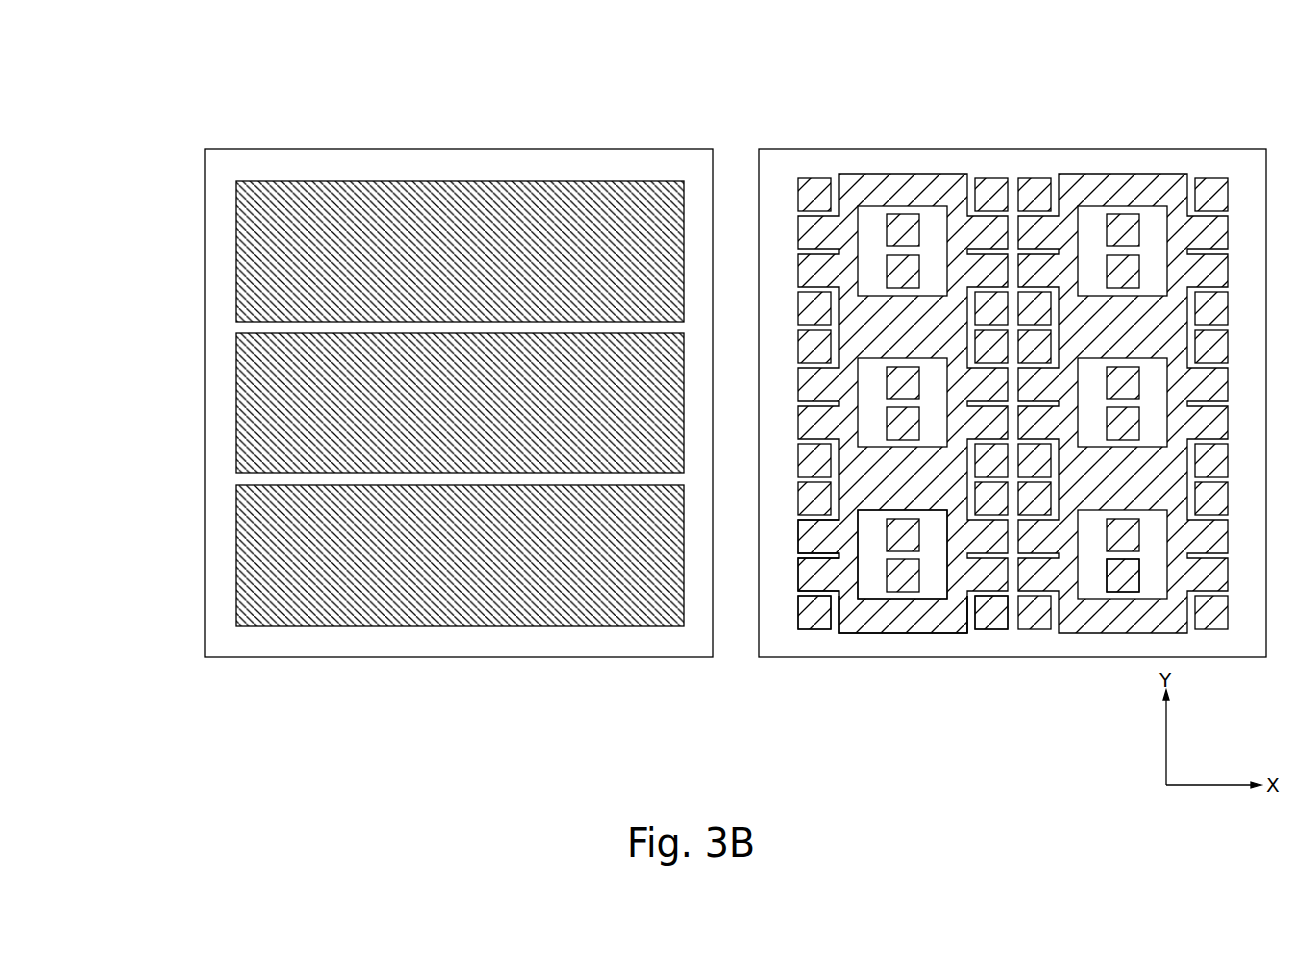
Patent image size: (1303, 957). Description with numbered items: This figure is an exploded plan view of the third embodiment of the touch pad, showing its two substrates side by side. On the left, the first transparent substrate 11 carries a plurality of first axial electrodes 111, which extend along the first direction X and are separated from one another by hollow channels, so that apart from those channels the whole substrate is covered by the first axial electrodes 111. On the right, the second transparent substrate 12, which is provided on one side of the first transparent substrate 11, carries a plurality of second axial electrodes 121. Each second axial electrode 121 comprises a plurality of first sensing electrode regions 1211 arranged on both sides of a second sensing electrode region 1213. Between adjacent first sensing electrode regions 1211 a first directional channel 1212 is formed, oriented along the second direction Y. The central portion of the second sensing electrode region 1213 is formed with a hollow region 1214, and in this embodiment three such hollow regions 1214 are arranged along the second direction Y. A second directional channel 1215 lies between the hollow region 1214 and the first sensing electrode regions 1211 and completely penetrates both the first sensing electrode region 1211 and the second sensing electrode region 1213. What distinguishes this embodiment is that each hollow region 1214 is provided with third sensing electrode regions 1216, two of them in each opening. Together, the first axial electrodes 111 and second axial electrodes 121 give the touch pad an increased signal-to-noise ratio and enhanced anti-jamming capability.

The first transparent substrate 11 is at (205, 163).
The first axial electrodes 111 is at (197, 187).
The second transparent substrate 12 is at (759, 165).
The second axial electrodes 121 is at (989, 142).
The first sensing electrode regions 1211 is at (818, 618).
The first directional channel 1212 is at (800, 543).
The second sensing electrode region 1213 is at (943, 618).
The hollow region 1214 is at (873, 555).
The second directional channel 1215 is at (971, 617).
The third sensing electrode region 1216 is at (1120, 583).